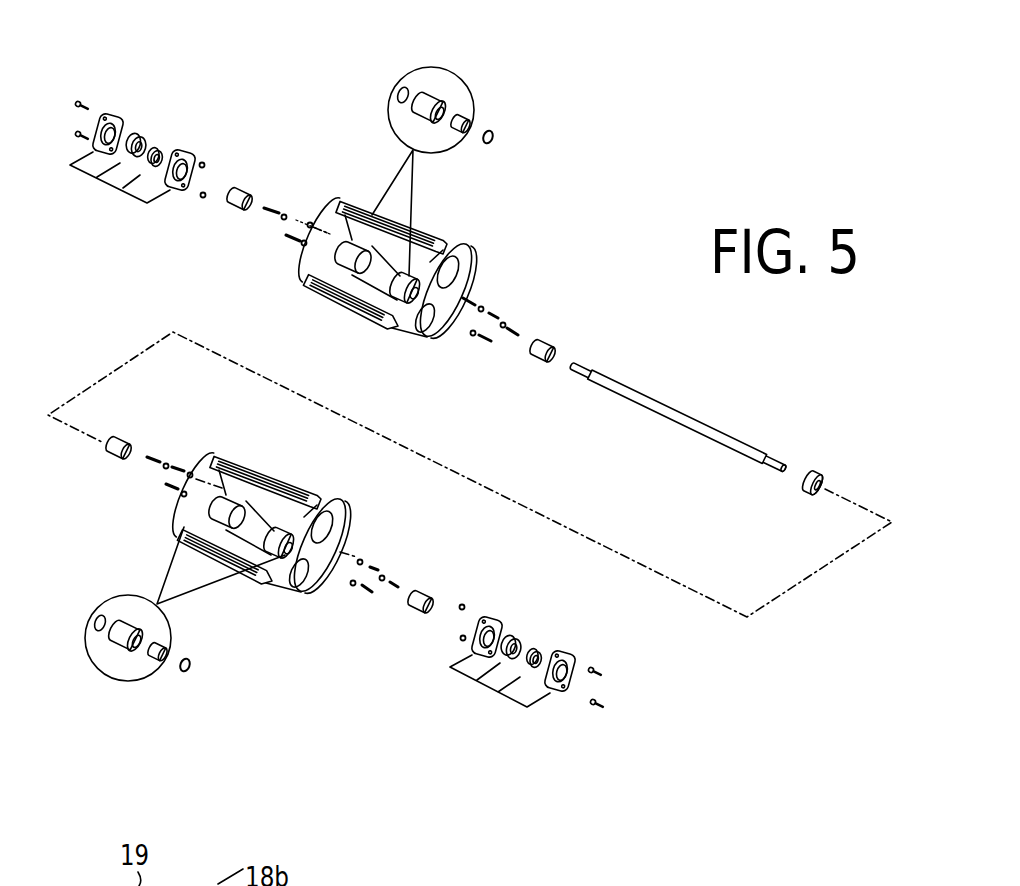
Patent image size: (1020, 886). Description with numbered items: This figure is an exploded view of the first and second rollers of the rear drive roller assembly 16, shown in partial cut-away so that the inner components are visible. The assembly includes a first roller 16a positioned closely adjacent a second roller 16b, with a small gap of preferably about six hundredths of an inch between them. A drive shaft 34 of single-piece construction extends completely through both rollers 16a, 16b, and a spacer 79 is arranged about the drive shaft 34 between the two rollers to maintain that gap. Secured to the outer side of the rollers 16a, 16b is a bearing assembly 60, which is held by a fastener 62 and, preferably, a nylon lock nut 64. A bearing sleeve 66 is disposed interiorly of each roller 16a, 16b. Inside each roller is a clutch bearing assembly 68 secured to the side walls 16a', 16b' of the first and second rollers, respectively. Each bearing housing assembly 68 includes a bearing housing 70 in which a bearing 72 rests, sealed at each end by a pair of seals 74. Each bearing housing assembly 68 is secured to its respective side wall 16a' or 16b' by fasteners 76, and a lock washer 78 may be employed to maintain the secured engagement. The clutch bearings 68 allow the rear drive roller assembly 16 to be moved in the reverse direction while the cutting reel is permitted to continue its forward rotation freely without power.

The rear drive roller assembly 16 is at (650, 232).
The first roller 16a is at (421, 282).
The side wall of first roller 16a' is at (477, 277).
The second roller 16b is at (277, 508).
The side wall of second roller 16b' is at (333, 520).
The drive shaft 34 is at (688, 408).
The bearing assembly 60 is at (107, 185).
The fastener 62 is at (76, 99).
The nylon lock nut 64 is at (199, 202).
The bearing sleeve 66 is at (242, 212).
The clutch bearing assembly 68 is at (470, 90).
The bearing housing 70 is at (445, 94).
The bearing 72 is at (486, 115).
The seal 74 is at (404, 86).
The fastener 76 is at (277, 206).
The lock washer 78 is at (291, 209).
The spacer 79 is at (815, 470).